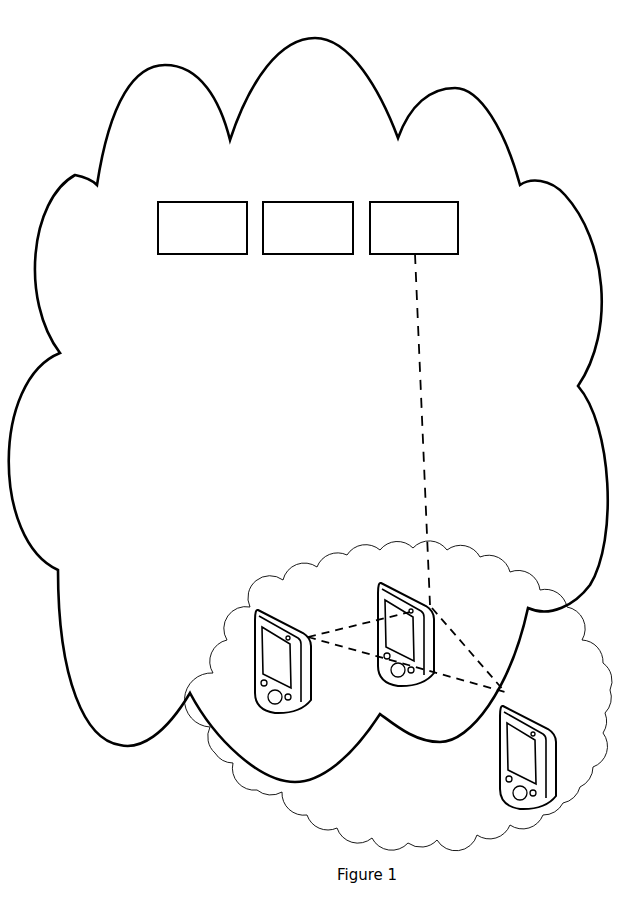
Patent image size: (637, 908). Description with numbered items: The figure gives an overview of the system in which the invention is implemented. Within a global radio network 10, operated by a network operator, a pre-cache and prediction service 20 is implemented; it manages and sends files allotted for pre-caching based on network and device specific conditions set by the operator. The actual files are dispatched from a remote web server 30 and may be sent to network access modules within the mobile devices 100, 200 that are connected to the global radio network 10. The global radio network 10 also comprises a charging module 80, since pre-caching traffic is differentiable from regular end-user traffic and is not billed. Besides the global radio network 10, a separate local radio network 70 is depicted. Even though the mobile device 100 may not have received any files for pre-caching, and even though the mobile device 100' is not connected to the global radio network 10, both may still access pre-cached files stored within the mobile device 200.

The global radio network 10 is at (392, 110).
The pre-cache and prediction service 20 is at (202, 228).
The charging module 80 is at (308, 228).
The remote web server 30 is at (414, 228).
The local radio network 70 is at (290, 818).
The mobile device 100 is at (307, 666).
The mobile device 100' is at (554, 757).
The mobile device 200 is at (423, 575).